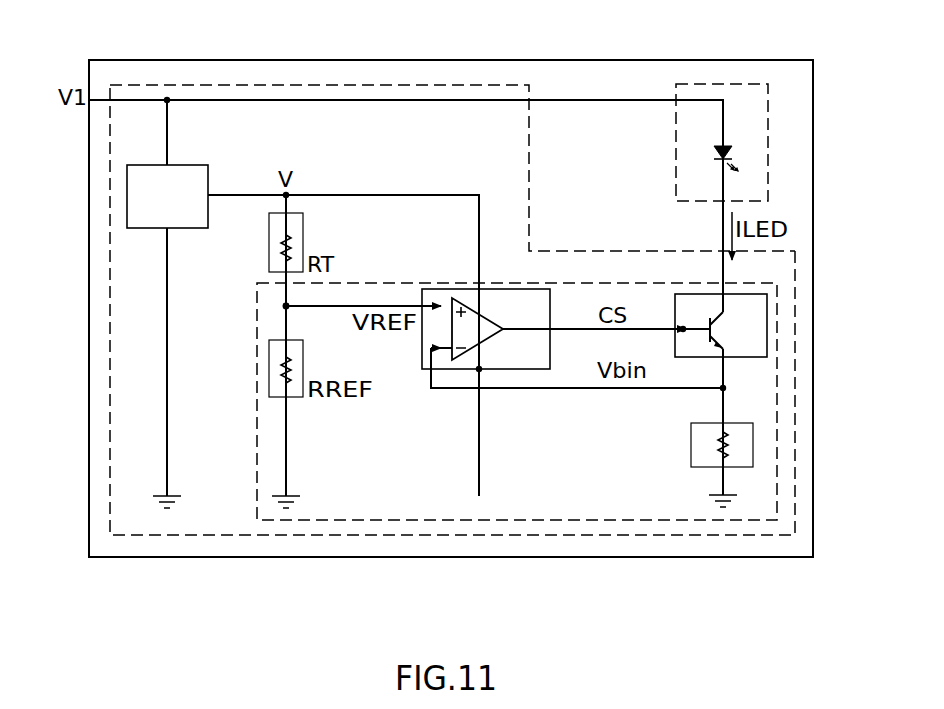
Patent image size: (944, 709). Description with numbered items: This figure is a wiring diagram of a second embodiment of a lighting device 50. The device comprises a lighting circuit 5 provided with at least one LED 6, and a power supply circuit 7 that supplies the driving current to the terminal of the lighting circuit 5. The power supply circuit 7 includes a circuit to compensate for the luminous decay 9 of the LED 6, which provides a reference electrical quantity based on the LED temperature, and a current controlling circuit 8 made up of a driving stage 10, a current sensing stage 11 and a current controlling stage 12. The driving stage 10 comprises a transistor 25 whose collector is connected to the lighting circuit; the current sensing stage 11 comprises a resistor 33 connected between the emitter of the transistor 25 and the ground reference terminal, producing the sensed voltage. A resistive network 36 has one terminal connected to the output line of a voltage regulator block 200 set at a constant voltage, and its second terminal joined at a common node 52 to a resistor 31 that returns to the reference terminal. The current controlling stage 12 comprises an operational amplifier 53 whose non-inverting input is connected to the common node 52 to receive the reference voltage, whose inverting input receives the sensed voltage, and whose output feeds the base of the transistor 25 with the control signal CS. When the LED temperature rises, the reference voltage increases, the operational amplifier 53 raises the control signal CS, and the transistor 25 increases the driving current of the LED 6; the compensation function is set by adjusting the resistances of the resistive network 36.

The lighting circuit 5 is at (727, 84).
The LED 6 is at (734, 148).
The power supply circuit 7 is at (353, 85).
The current controlling circuit 8 is at (673, 535).
The circuit to compensate for the luminous decay 9 is at (303, 228).
The driving stage 10 is at (768, 325).
The current sensing stage 11 is at (691, 467).
The current controlling stage 12 is at (516, 369).
The transistor 25 is at (722, 330).
The resistor 31 is at (297, 383).
The resistor 33 is at (716, 440).
The resistive network 36 is at (290, 247).
The lighting device 50 is at (160, 557).
The common node 52 is at (288, 309).
The operational amplifier 53 is at (468, 353).
The voltage regulator block 200 is at (187, 173).